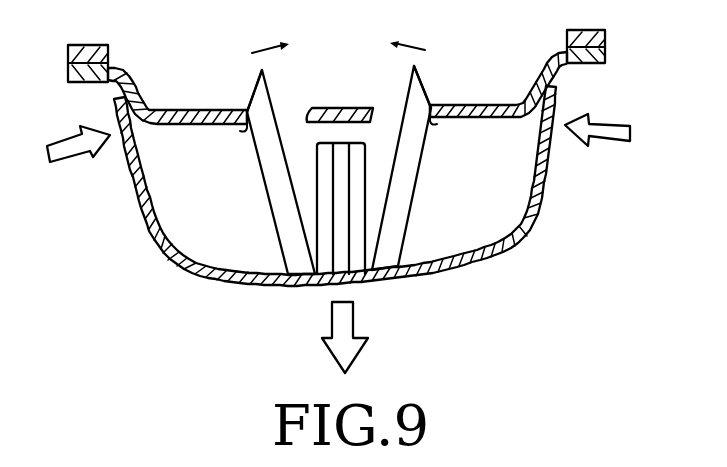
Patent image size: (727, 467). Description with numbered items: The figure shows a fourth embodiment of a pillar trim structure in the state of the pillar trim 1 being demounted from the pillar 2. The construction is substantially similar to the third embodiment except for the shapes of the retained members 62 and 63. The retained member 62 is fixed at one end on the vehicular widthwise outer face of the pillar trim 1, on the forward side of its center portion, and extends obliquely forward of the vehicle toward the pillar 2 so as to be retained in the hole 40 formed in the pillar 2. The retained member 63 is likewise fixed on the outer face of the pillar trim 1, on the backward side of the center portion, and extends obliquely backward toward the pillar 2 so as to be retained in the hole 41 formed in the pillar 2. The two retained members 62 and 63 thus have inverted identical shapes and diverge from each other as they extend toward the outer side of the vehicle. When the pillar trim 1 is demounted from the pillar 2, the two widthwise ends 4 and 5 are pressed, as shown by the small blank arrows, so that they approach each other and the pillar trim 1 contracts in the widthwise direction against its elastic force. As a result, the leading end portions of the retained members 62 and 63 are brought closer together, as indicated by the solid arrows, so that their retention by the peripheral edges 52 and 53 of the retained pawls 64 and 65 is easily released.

The pillar trim 1 is at (233, 293).
The pillar 2 is at (598, 67).
The widthwise end 4 is at (113, 114).
The widthwise end 5 is at (563, 106).
The hole 40 is at (309, 108).
The hole 41 is at (370, 108).
The peripheral edge 52 is at (244, 129).
The peripheral edge 53 is at (431, 124).
The retained member 62 is at (283, 229).
The retained member 63 is at (406, 207).
The retained pawl 64 is at (244, 112).
The retained pawl 65 is at (457, 105).